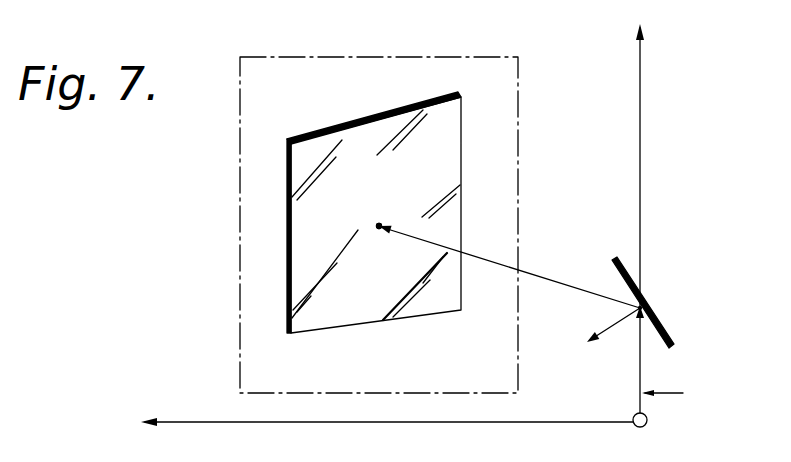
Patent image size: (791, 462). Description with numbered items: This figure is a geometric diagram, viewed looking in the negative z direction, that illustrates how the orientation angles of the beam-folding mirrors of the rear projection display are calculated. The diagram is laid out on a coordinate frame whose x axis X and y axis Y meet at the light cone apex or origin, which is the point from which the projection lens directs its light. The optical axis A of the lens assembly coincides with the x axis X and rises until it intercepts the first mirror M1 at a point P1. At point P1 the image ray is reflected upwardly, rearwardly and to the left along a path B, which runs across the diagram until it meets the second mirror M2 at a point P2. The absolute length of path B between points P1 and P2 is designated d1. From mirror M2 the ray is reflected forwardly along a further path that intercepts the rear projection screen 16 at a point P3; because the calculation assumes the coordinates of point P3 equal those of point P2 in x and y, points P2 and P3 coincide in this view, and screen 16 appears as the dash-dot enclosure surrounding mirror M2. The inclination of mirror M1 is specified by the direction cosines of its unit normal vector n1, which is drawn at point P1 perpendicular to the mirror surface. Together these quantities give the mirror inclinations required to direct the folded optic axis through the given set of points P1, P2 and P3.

The rear projection screen 16 is at (240, 280).
The second beam-folding mirror M2 is at (332, 128).
The first beam-folding mirror M1 is at (673, 341).
The point of interception on mirror M1 P1 is at (638, 308).
The point of interception on mirror M2 P2 is at (379, 224).
The point of interception on screen P3 is at (393, 205).
The path B is at (509, 267).
The length of path B d1 is at (500, 267).
The unit normal vector of mirror M1 n1 is at (612, 326).
The optical axis A is at (669, 395).
The x axis X is at (650, 218).
The y axis Y is at (386, 436).